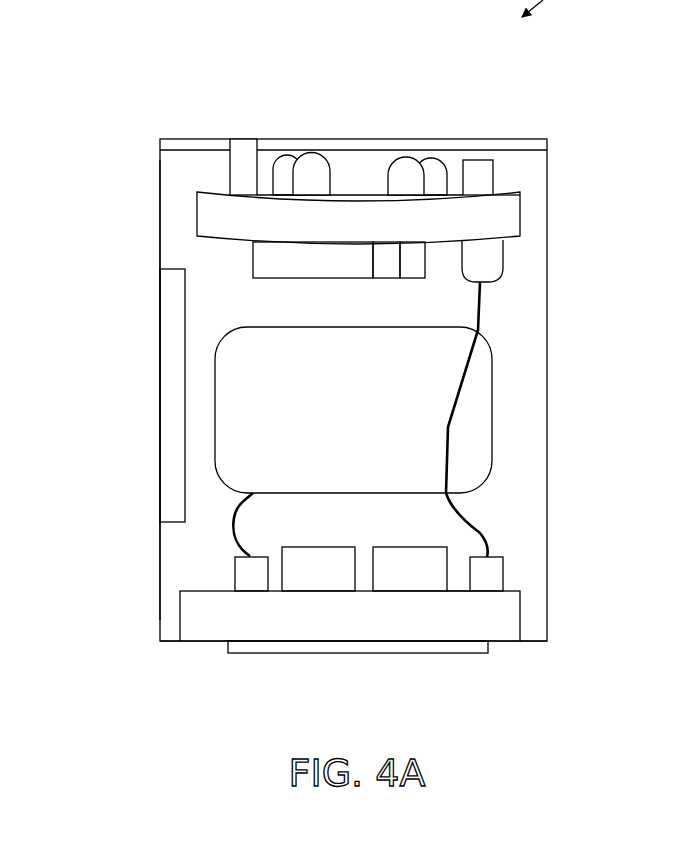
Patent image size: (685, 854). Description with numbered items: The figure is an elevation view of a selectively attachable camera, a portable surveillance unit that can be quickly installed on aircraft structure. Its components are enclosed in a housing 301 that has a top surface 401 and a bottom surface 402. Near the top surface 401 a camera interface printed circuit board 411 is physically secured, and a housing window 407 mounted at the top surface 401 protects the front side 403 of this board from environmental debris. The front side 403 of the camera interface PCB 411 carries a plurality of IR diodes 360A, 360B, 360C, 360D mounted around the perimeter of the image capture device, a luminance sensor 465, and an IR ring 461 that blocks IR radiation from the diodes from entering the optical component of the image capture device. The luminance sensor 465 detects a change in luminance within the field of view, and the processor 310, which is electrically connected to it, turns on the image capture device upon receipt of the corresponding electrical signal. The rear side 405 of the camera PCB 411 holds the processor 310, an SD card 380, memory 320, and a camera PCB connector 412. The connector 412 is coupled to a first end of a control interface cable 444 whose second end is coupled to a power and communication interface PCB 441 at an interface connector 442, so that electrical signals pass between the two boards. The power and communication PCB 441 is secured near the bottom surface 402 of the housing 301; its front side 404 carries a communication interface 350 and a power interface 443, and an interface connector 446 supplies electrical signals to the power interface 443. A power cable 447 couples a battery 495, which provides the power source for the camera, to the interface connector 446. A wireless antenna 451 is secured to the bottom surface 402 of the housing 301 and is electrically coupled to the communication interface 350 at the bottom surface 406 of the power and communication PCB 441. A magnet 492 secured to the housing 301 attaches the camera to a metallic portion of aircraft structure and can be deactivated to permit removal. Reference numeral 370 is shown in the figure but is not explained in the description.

The housing 301 is at (160, 192).
The processor 310 is at (253, 256).
The memory 320 is at (409, 279).
The communication interface 350 is at (318, 547).
The IR diode 360A is at (288, 157).
The IR diode 360B is at (307, 155).
The IR diode 360C is at (403, 157).
The IR diode 360D is at (432, 158).
The cover window 370 is at (230, 166).
The SD card 380 is at (376, 279).
The top surface 401 is at (159, 134).
The bottom surface 402 is at (175, 647).
The front side 403 is at (511, 181).
The front side 404 is at (458, 585).
The rear side 405 is at (446, 251).
The bottom surface 406 is at (506, 647).
The housing window 407 is at (203, 138).
The camera interface printed circuit board 411 is at (197, 222).
The camera PCB connector 412 is at (503, 261).
The power and communication interface PCB 441 is at (520, 619).
The interface connector 442 is at (503, 576).
The power interface 443 is at (407, 547).
The control interface cable 444 is at (480, 531).
The interface connector 446 is at (235, 576).
The power cable 447 is at (230, 540).
The wireless antenna 451 is at (290, 654).
The IR ring 461 is at (358, 157).
The luminance sensor 465 is at (481, 160).
The magnet 492 is at (160, 405).
The battery 495 is at (492, 404).